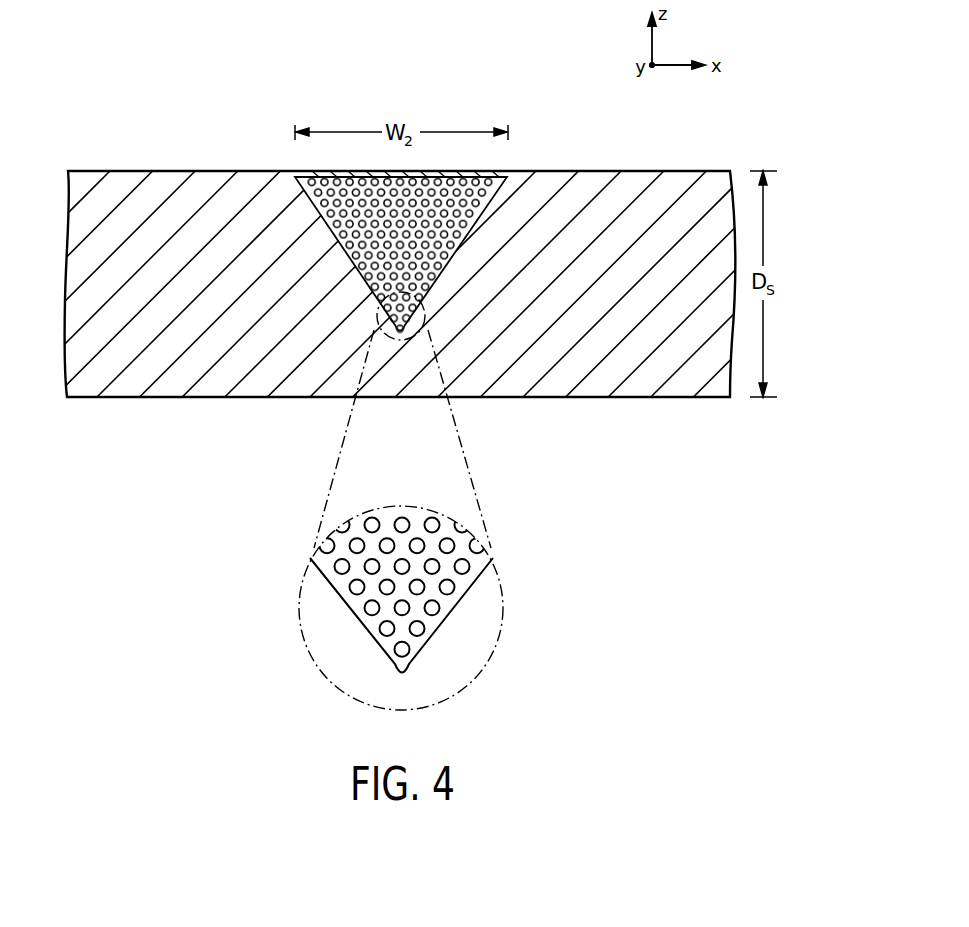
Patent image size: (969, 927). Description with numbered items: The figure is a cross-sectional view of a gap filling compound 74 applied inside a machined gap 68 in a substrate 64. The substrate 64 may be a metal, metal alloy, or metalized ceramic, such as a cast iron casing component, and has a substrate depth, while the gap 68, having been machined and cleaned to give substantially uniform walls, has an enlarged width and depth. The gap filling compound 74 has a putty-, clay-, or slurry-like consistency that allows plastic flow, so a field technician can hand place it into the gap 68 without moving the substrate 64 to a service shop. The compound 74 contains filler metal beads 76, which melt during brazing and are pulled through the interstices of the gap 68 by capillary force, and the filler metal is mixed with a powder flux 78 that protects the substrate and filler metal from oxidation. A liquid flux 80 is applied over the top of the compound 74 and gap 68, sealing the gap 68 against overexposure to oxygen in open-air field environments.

The substrate 64 is at (631, 171).
The gap 68 is at (497, 161).
The gap filling compound 74 is at (370, 418).
The filler metal beads 76 is at (372, 525).
The powder flux 78 is at (400, 542).
The liquid flux 80 is at (326, 172).